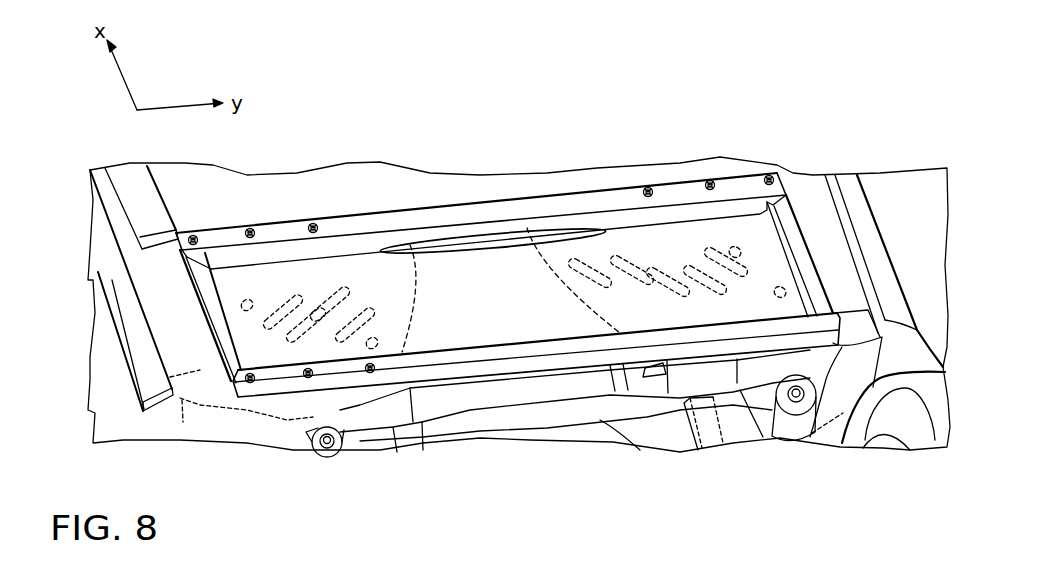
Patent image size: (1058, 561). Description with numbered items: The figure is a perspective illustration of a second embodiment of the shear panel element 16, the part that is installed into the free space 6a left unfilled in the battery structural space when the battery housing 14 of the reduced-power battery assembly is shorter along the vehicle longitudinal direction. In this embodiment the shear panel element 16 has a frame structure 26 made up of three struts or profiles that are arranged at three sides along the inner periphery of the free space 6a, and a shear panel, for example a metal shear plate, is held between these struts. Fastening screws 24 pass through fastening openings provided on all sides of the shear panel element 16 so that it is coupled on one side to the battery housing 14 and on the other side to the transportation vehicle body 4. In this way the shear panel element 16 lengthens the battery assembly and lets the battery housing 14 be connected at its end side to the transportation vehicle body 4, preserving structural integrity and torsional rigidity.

The transportation vehicle body 4 is at (108, 275).
The free space 6a is at (199, 335).
The battery housing 14 is at (443, 310).
The shear panel element 16 is at (509, 276).
The fastening screws 24 is at (766, 177).
The frame structure 26 is at (462, 374).